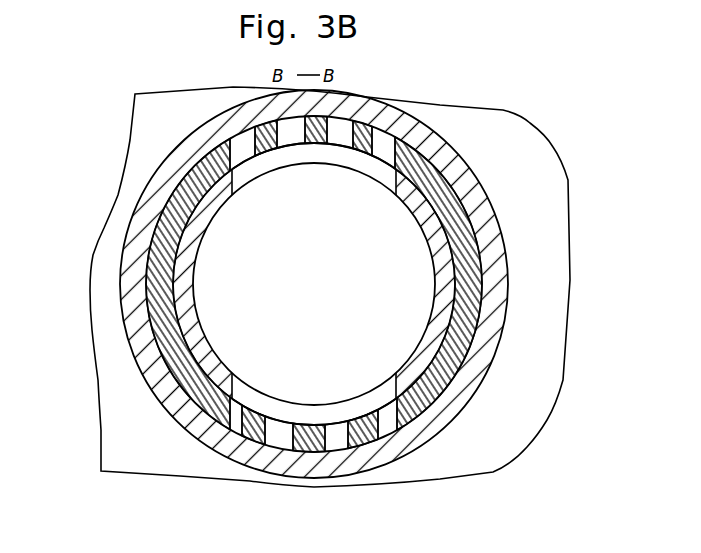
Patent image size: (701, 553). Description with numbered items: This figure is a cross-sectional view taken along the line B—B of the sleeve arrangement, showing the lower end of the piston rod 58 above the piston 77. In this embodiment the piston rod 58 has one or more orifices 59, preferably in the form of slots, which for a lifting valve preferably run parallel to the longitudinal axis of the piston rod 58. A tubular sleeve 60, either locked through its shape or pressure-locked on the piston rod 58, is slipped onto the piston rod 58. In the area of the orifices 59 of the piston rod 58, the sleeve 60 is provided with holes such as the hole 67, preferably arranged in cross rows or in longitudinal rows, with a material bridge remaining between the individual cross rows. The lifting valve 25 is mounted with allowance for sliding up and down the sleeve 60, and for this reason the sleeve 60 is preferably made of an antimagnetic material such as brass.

The lifting valve 25 is at (481, 213).
The piston rod 58 is at (432, 342).
The orifices 59 is at (235, 177).
The tubular sleeve 60 is at (468, 298).
The hole 67 is at (343, 130).
The piston 77 is at (552, 241).